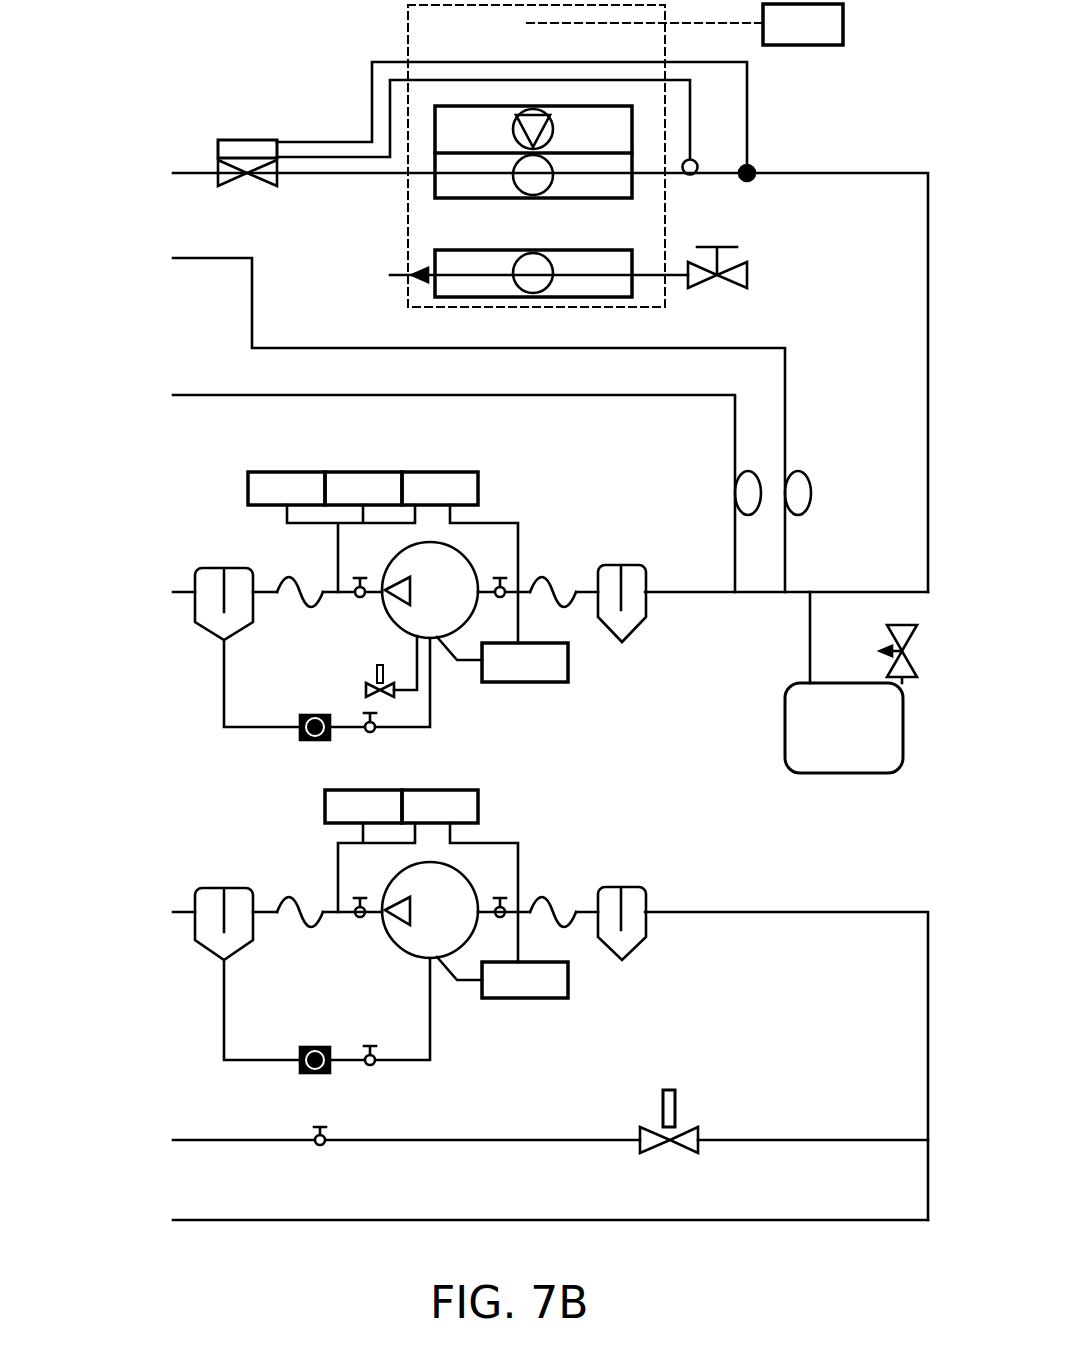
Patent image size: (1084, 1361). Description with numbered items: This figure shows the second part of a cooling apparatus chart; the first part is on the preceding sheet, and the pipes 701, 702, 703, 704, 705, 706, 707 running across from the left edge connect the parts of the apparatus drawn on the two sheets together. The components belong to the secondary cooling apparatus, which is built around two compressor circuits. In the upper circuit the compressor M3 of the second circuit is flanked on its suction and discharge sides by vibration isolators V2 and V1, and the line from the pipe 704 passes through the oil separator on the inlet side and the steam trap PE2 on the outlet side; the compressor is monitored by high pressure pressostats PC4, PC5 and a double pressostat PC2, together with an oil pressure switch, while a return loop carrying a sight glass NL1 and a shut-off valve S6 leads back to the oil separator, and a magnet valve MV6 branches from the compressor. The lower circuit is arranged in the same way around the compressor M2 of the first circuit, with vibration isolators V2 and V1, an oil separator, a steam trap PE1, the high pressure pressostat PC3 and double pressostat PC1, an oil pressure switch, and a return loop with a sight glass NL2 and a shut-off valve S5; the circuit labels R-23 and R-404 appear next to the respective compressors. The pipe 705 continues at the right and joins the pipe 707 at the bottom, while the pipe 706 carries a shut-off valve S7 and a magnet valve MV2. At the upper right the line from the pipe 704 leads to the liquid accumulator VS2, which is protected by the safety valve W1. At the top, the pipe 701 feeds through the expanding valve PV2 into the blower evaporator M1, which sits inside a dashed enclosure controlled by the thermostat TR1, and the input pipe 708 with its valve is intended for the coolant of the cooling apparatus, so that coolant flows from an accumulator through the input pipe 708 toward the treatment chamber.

The pipe 701 is at (173, 173).
The pipe 702 is at (173, 258).
The pipe 703 is at (173, 395).
The pipe 704 is at (173, 592).
The pipe 705 is at (173, 912).
The pipe 706 is at (173, 1140).
The pipe 707 is at (173, 1220).
The input pipe 708 is at (750, 278).
The thermostat TR1 is at (803, 24).
The expanding valve PV2 is at (247, 144).
The blower evaporator M1 is at (533, 201).
The compressor M2 is at (430, 910).
The compressor M3 is at (430, 590).
The vibration isolator V1 is at (551, 739).
The vibration isolator V2 is at (298, 739).
The steam trap PE1 is at (625, 905).
The steam trap PE2 is at (625, 586).
The double pressostat PC1 is at (460, 876).
The double pressostat PC2 is at (460, 557).
The high pressure pressostat PC3 is at (370, 851).
The high pressure pressostat PC4 is at (331, 532).
The high pressure pressostat PC5 is at (363, 488).
The sight glass NL1 is at (301, 745).
The sight glass NL2 is at (296, 1042).
The shut-off valve S5 is at (369, 1038).
The shut-off valve S6 is at (369, 744).
The shut-off valve S7 is at (319, 1119).
The magnet valve MV2 is at (639, 1121).
The solenoid valve MV6 is at (353, 667).
The liquid accumulator VS2 is at (844, 682).
The safety valve W1 is at (871, 651).
The refrigerant R-23 is at (326, 625).
The refrigerant R-404 is at (331, 965).